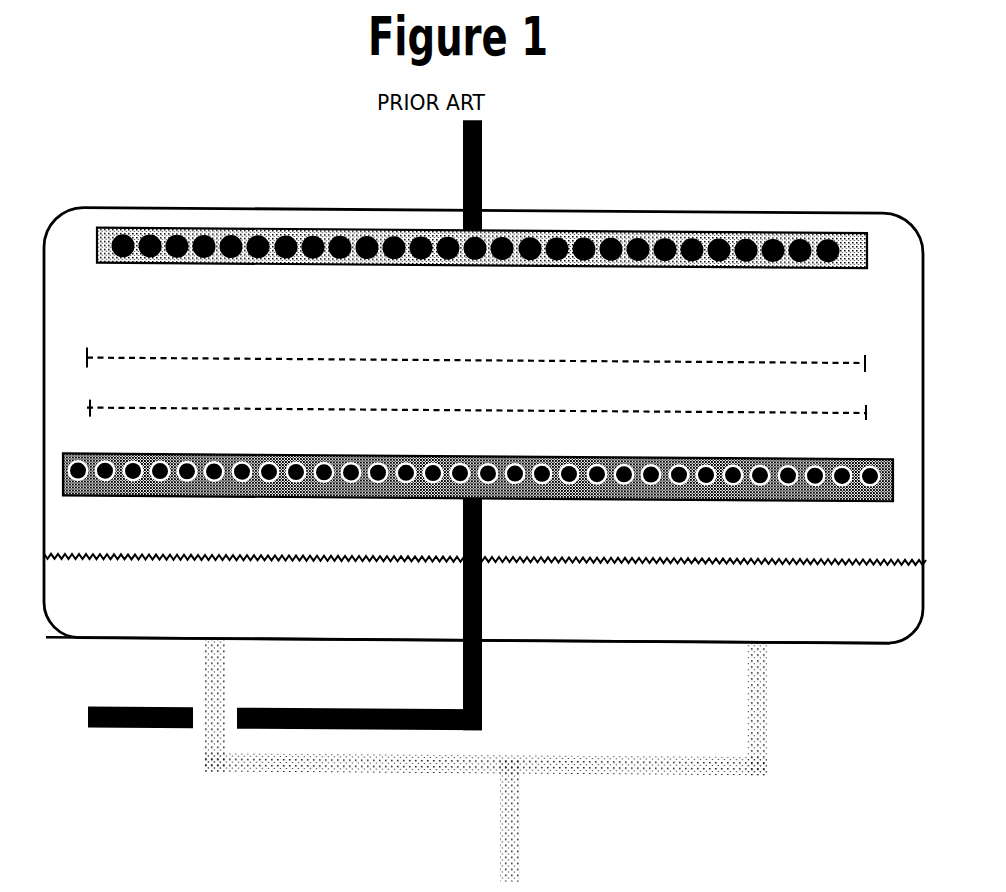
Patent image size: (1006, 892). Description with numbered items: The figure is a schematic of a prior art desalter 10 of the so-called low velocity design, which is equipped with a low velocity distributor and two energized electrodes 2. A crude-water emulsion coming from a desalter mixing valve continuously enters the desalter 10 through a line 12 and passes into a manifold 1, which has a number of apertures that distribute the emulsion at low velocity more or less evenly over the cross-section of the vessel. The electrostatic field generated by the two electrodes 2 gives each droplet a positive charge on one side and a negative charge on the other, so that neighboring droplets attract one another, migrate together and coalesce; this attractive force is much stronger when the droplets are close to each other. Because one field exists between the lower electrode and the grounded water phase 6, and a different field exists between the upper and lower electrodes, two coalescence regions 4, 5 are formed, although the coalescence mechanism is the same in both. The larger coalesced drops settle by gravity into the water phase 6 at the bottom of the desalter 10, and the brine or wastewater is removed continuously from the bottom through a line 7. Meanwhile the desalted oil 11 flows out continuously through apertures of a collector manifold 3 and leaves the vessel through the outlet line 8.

The manifold 1 is at (462, 452).
The electrodes 2 is at (219, 358).
The collector manifold 3 is at (422, 263).
The coalescence region 4 is at (931, 441).
The coalescence region 5 is at (931, 345).
The water phase 6 is at (832, 634).
The line 7 is at (520, 808).
The outlet line 8 is at (482, 164).
The desalter 10 is at (691, 207).
The desalted oil 11 is at (708, 332).
The line 12 is at (124, 729).